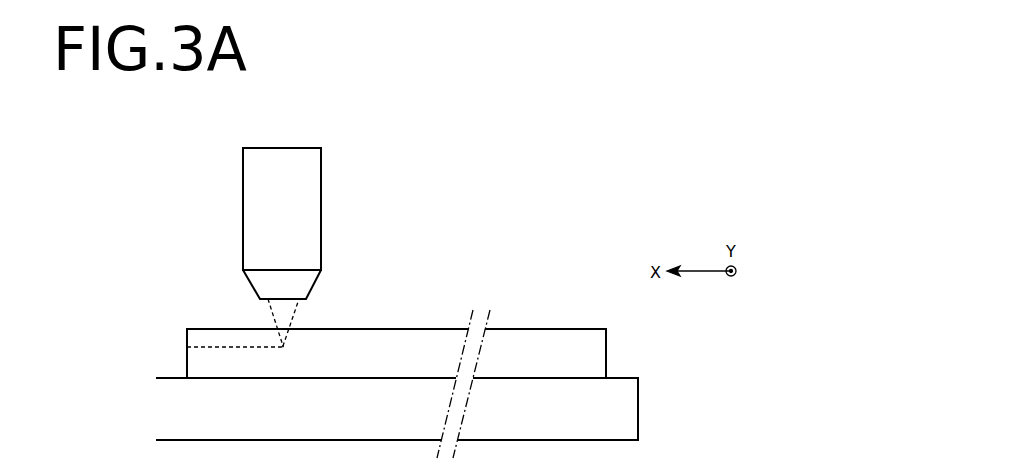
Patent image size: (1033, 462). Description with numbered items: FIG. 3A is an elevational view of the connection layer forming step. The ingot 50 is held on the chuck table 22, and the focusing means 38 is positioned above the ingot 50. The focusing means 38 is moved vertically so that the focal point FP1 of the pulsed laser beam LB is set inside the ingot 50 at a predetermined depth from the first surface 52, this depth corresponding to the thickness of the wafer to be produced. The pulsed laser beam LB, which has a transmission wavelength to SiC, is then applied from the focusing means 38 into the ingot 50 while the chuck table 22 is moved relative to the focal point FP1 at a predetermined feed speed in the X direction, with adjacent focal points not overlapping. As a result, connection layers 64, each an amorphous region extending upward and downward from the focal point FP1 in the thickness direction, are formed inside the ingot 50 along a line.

The focusing means 38 is at (310, 200).
The pulsed laser beam LB is at (273, 315).
The focal point FP1 is at (283, 347).
The connection layer 64 is at (203, 347).
The ingot 50 is at (598, 354).
The first surface 52 is at (555, 329).
The chuck table 22 is at (625, 420).